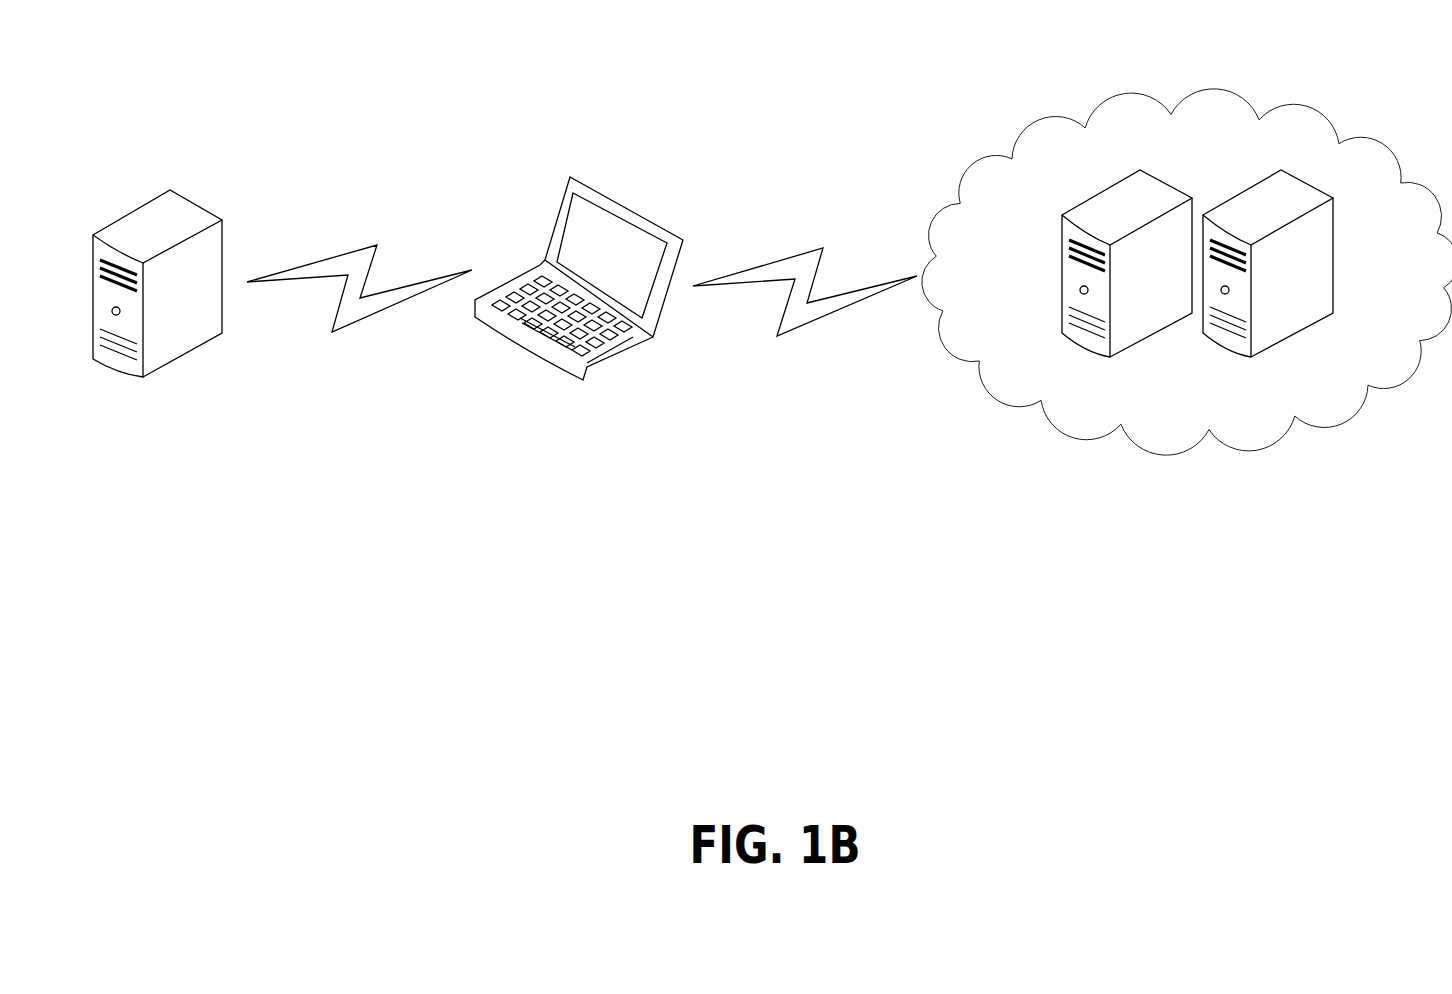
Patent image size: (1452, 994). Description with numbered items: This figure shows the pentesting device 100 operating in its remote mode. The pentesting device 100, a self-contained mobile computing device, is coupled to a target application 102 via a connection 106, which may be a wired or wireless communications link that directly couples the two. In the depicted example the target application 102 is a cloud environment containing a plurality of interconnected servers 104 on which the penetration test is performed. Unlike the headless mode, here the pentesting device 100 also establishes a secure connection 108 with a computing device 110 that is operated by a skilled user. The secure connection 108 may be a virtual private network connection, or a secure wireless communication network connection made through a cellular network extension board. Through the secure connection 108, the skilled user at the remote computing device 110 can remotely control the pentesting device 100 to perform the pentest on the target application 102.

The pentesting device 100 is at (555, 172).
The target application 102 is at (1187, 229).
The interconnected servers 104 is at (1093, 230).
The connection 106 is at (780, 228).
The secure connection 108 is at (350, 245).
The computing device 110 is at (152, 172).